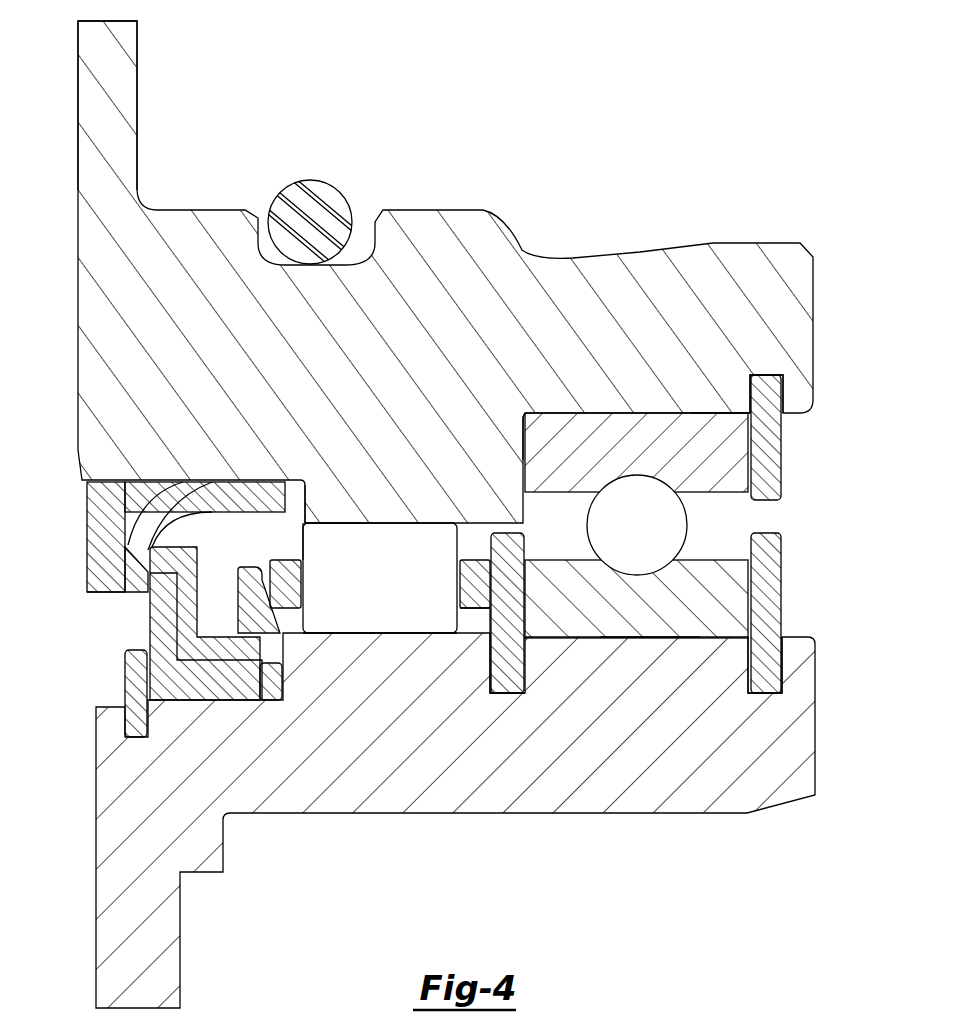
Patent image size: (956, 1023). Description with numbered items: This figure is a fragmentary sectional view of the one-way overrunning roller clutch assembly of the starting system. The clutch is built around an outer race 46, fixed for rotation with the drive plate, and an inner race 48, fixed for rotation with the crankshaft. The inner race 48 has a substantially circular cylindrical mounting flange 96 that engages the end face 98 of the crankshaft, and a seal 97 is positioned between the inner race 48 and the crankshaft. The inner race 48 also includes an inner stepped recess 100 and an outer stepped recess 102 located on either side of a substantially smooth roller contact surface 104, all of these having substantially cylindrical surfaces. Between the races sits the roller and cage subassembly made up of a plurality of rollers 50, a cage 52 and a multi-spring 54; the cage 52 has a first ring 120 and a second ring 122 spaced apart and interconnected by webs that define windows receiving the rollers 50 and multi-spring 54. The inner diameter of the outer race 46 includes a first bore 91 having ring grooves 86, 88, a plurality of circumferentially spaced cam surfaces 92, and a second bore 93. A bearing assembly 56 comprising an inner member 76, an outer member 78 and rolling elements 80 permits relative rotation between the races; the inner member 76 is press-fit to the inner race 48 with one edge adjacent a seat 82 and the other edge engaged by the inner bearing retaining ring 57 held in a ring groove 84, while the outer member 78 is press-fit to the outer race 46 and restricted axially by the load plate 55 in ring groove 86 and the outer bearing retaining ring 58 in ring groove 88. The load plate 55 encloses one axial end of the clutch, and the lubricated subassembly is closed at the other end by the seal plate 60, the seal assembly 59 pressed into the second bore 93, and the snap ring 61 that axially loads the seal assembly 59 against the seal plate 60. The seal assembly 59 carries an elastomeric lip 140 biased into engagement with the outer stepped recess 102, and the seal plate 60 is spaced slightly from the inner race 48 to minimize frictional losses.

The outer race 46 is at (333, 815).
The inner race 48 is at (418, 210).
The rollers 50 is at (393, 540).
The cage 52 is at (283, 577).
The multi-spring 54 is at (477, 552).
The load plate 55 is at (507, 540).
The bearing assembly 56 is at (686, 479).
The inner bearing retaining ring 57 is at (768, 488).
The outer bearing retaining ring 58 is at (772, 612).
The seal assembly 59 is at (93, 605).
The seal plate 60 is at (270, 687).
The snap ring 61 is at (128, 685).
The inner member 76 is at (723, 485).
The outer member 78 is at (735, 573).
The rolling elements 80 is at (597, 533).
The seat 82 is at (541, 438).
The ring groove 84 is at (777, 393).
The ring groove 86 is at (505, 698).
The ring groove 88 is at (777, 685).
The first bore 91 is at (643, 623).
The cam surfaces 92 is at (385, 632).
The second bore 93 is at (207, 697).
The mounting flange 96 is at (117, 57).
The seal 97 is at (310, 190).
The end face 98 is at (293, 518).
The inner stepped recess 100 is at (693, 418).
The outer stepped recess 102 is at (183, 500).
The roller contact surface 104 is at (340, 530).
The first ring 120 is at (470, 597).
The second ring 122 is at (288, 607).
The elastomeric lip 140 is at (253, 490).